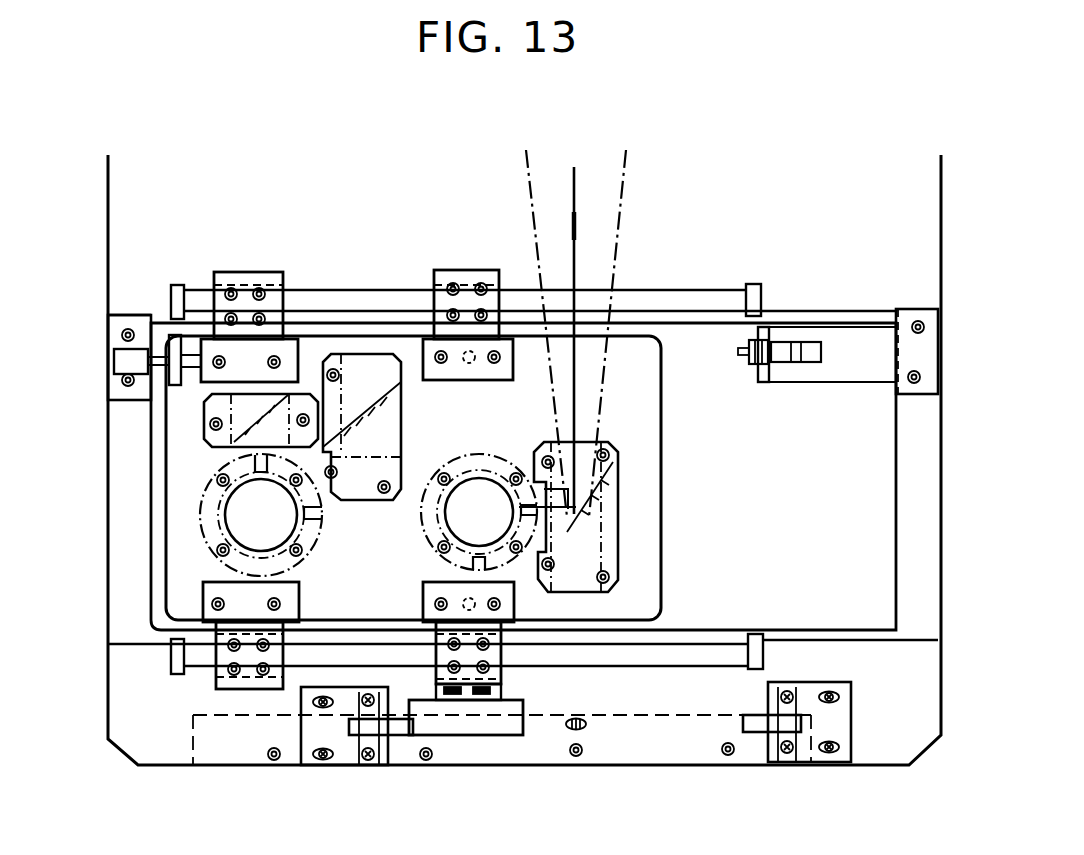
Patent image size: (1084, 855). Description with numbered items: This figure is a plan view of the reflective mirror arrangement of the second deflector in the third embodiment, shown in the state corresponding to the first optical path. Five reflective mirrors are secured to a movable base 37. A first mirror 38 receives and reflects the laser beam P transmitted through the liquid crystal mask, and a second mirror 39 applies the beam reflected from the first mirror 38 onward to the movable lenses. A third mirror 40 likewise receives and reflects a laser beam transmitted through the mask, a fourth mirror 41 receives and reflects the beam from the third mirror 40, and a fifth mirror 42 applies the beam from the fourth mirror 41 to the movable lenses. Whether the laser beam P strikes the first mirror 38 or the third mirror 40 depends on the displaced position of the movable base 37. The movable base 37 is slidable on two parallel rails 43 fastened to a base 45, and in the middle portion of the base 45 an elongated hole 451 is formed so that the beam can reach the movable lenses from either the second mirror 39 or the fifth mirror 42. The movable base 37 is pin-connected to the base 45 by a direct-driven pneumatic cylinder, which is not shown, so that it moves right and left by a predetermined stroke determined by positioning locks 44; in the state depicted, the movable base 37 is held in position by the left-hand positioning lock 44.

The movable base 37 is at (648, 568).
The first mirror 38 is at (605, 518).
The second mirror 39 is at (490, 495).
The third mirror 40 is at (405, 423).
The fourth mirror 41 is at (205, 408).
The fifth mirror 42 is at (200, 520).
The parallel rails 43 is at (338, 300).
The positioning locks 44 is at (400, 735).
The base 45 is at (125, 693).
The elongated hole 451 is at (848, 410).
The laser beam P is at (605, 193).